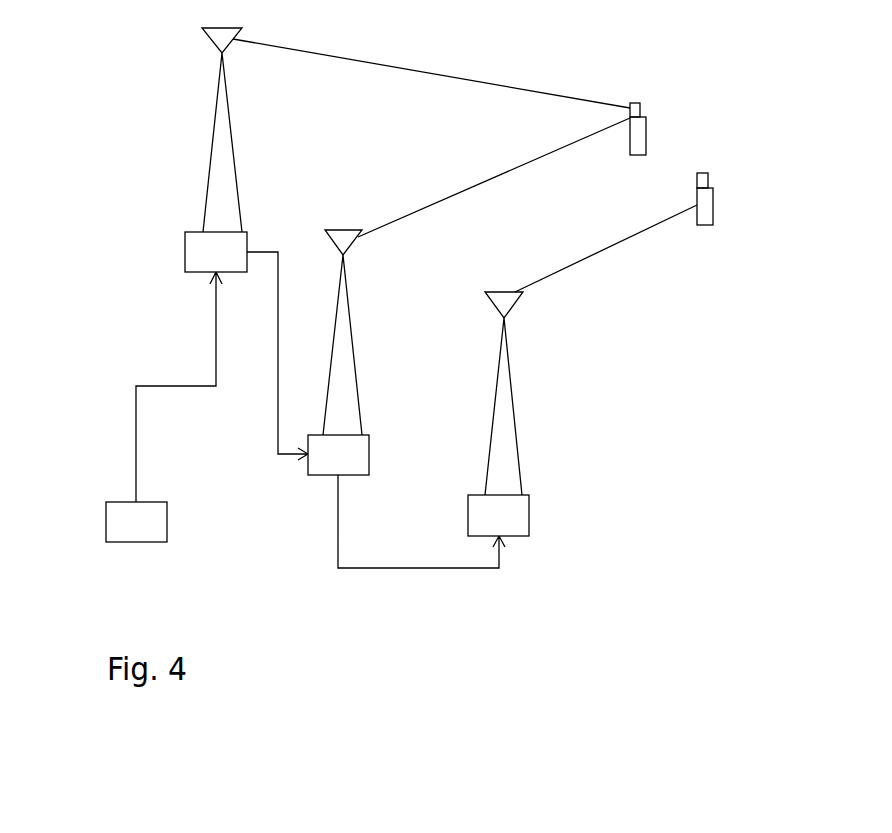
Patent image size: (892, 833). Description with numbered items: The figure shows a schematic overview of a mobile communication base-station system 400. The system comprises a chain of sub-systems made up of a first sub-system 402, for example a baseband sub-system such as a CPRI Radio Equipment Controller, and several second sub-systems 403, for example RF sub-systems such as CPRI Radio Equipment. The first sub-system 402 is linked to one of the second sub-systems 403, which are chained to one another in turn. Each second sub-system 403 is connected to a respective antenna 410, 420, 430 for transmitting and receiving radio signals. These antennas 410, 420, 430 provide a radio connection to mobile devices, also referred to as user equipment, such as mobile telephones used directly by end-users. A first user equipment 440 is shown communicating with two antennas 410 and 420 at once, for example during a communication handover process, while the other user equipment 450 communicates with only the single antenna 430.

The wireless communication system 400 is at (658, 336).
The first sub-system 402 is at (106, 513).
The second sub-system 403 is at (185, 250).
The antenna 410 is at (222, 145).
The antenna 420 is at (345, 360).
The antenna 430 is at (515, 415).
The first user equipment 440 is at (643, 142).
The user equipment 450 is at (711, 212).